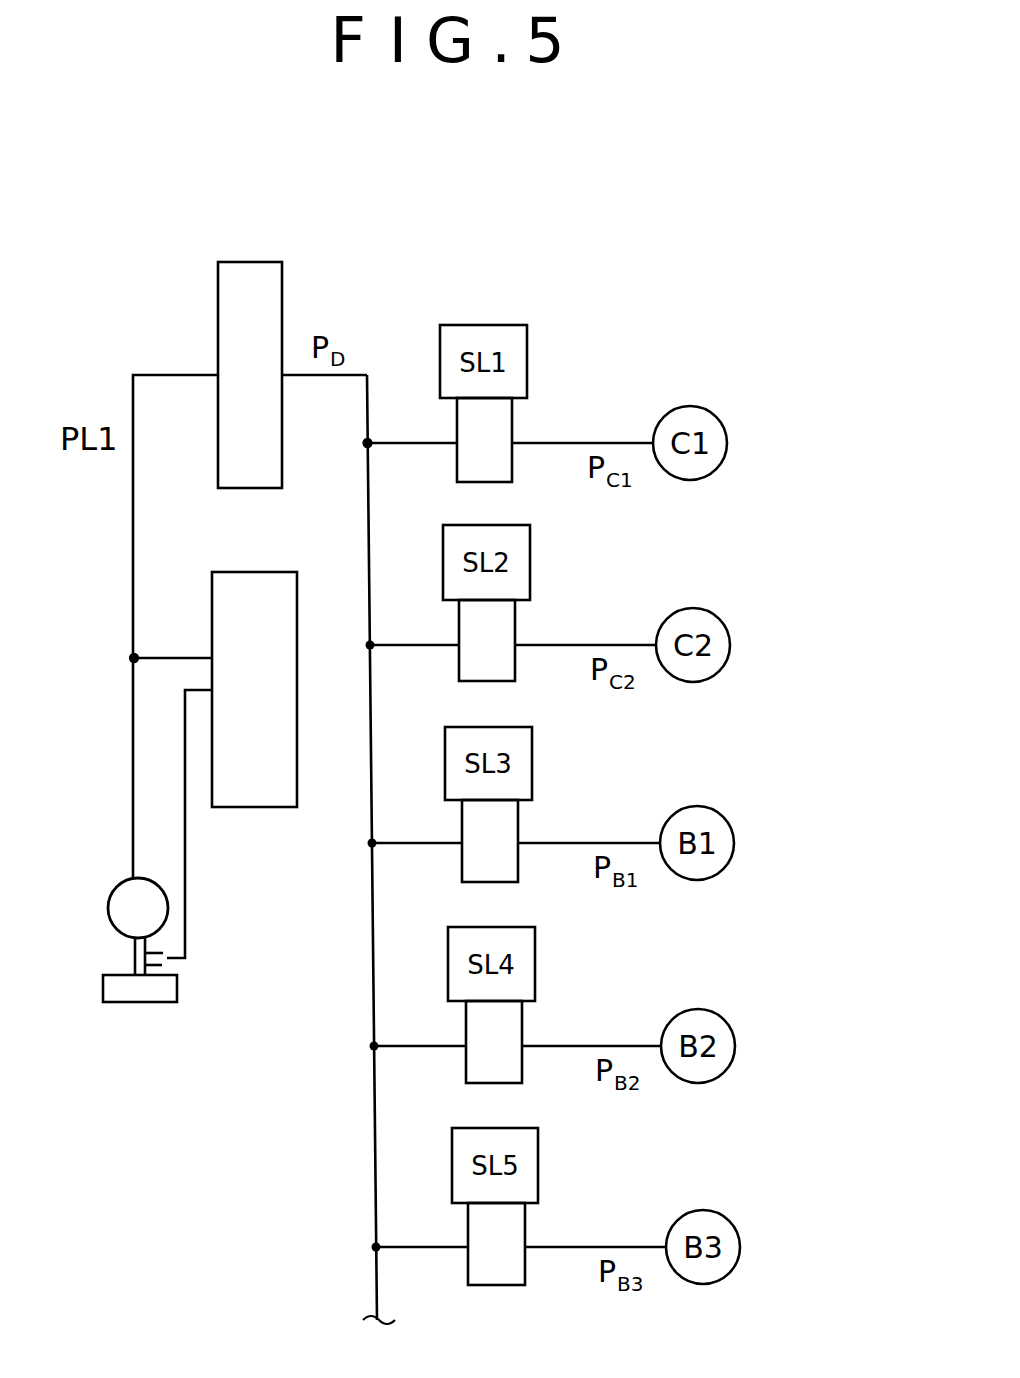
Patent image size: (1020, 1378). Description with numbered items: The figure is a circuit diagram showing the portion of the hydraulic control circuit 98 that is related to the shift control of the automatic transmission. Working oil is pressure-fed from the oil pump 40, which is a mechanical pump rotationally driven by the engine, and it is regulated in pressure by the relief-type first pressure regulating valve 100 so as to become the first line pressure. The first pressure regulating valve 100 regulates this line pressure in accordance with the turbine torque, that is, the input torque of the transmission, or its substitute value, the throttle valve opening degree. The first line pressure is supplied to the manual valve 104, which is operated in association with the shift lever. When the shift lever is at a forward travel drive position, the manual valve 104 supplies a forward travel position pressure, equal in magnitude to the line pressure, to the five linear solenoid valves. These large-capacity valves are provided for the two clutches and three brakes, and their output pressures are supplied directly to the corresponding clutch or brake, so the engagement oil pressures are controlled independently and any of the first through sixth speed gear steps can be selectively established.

The hydraulic control circuit 98 is at (795, 257).
The manual valve 104 is at (249, 262).
The first pressure regulating valve 100 is at (262, 590).
The oil pump 40 is at (108, 910).